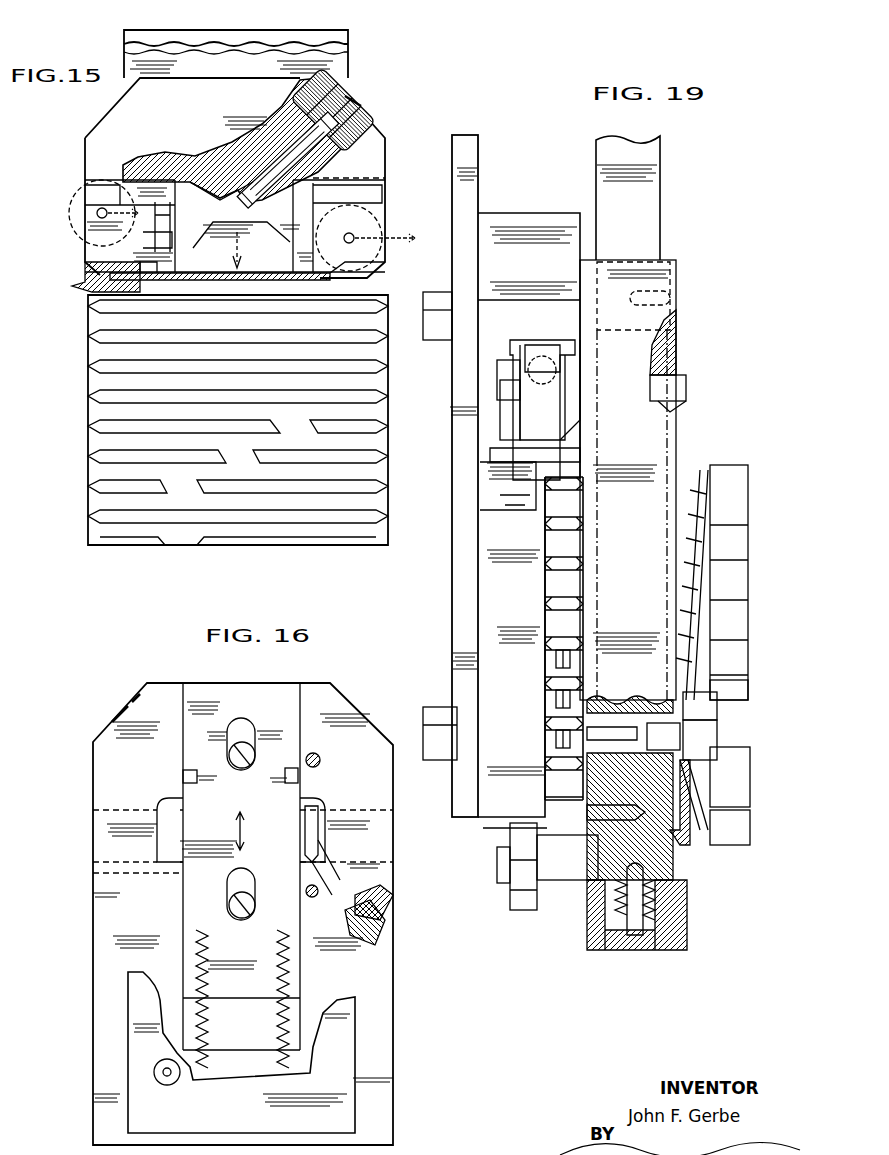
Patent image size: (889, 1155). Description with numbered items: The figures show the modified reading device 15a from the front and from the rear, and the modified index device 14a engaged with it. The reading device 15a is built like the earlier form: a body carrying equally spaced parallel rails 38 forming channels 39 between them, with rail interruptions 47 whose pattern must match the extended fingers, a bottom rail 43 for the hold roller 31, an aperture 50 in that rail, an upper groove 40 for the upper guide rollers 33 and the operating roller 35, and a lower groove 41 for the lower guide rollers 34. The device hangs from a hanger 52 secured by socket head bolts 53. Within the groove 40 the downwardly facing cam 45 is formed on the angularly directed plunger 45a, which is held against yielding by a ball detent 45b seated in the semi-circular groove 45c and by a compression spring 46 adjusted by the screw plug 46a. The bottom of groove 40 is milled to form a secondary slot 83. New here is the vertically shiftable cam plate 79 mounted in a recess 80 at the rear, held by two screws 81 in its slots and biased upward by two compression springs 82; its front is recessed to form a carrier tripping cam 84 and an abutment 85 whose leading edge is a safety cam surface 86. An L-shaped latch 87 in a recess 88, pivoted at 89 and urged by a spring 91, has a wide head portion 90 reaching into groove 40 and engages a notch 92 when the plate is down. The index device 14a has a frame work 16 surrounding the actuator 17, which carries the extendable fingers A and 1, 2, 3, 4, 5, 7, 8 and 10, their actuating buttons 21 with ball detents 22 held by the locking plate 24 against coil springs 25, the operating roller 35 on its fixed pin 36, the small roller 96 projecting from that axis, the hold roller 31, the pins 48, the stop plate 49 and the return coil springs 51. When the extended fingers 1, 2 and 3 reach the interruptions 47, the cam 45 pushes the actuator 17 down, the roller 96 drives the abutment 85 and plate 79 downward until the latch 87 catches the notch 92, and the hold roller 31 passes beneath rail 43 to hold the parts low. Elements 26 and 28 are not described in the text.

In FIG. 19, the extendable finger 1 is at (554, 742).
In FIG. 19, the extendable finger 2 is at (554, 702).
In FIG. 19, the extendable finger 3 is at (554, 664).
In FIG. 19, the extendable finger 4 is at (746, 652).
In FIG. 19, the extendable finger 5 is at (748, 622).
In FIG. 19, the extendable finger 7 is at (748, 582).
In FIG. 19, the extendable finger 8 is at (748, 542).
In FIG. 19, the extendable finger 10 is at (748, 498).
In FIG. 19, the index device 14a is at (682, 280).
In FIG. 15, the reading device 15a is at (120, 128).
In FIG. 16, the reading device 15a is at (332, 690).
In FIG. 19, the frame work 16 is at (645, 551).
In FIG. 19, the actuator 17 is at (710, 790).
In FIG. 19, the actuating buttons 21 is at (750, 654).
In FIG. 19, the ball detent 22 is at (698, 470).
In FIG. 19, the locking plate 24 is at (679, 346).
In FIG. 19, the coil spring 25 is at (686, 510).
In FIG. 19, the drive wheel 26 is at (750, 828).
In FIG. 19, the connecting rod 28 is at (736, 846).
In FIG. 19, the hold roller 31 is at (570, 831).
In FIG. 19, the upper guide rollers 33 is at (564, 452).
In FIG. 19, the lower guide rollers 34 is at (514, 908).
In FIG. 15, the operating roller 35 is at (68, 202).
In FIG. 19, the operating roller 35 is at (550, 404).
In FIG. 19, the fixed pin 36 is at (689, 392).
In FIG. 15, the rails 38 is at (110, 400).
In FIG. 19, the rails 38 is at (572, 594).
In FIG. 15, the channels 39 is at (120, 470).
In FIG. 15, the groove 40 is at (382, 194).
In FIG. 19, the groove 40 is at (530, 344).
In FIG. 19, the groove 41 is at (516, 826).
In FIG. 15, the bottom rail 43 is at (252, 546).
In FIG. 15, the cam 45 is at (258, 208).
In FIG. 19, the cam 45 is at (546, 344).
In FIG. 15, the plunger 45a is at (252, 136).
In FIG. 15, the ball detent 45b is at (334, 158).
In FIG. 15, the semi-circular groove 45c is at (282, 114).
In FIG. 15, the compression spring 46 is at (302, 93).
In FIG. 15, the screw plug 46a is at (362, 108).
In FIG. 16, the screw plug 46a is at (119, 700).
In FIG. 15, the interruptions 47 is at (302, 408).
In FIG. 19, the pins 48 is at (648, 889).
In FIG. 19, the stop plate 49 is at (684, 906).
In FIG. 15, the aperture 50 is at (174, 546).
In FIG. 19, the coil springs 51 is at (614, 916).
In FIG. 15, the hangers 52 is at (343, 57).
In FIG. 16, the hangers 52 is at (260, 1118).
In FIG. 19, the hangers 52 is at (478, 150).
In FIG. 16, the socket head bolts 53 is at (320, 760).
In FIG. 19, the socket head bolts 53 is at (452, 342).
In FIG. 15, the cam plate 79 is at (273, 261).
In FIG. 16, the cam plate 79 is at (258, 700).
In FIG. 16, the recess 80 is at (302, 1010).
In FIG. 16, the screws 81 is at (248, 772).
In FIG. 16, the compression springs 82 is at (268, 1020).
In FIG. 15, the secondary slot 83 is at (382, 211).
In FIG. 19, the secondary slot 83 is at (502, 374).
In FIG. 15, the carrier tripping cam 84 is at (220, 194).
In FIG. 15, the abutment 85 is at (220, 220).
In FIG. 19, the abutment 85 is at (502, 398).
In FIG. 15, the cam surface 86 is at (204, 223).
In FIG. 19, the cam surface 86 is at (504, 424).
In FIG. 15, the L-shaped latch 87 is at (156, 218).
In FIG. 16, the L-shaped latch 87 is at (304, 832).
In FIG. 15, the recess 88 is at (157, 246).
In FIG. 16, the recess 88 is at (332, 862).
In FIG. 19, the recess 88 is at (480, 490).
In FIG. 15, the pivot 89 is at (168, 284).
In FIG. 16, the pivot 89 is at (314, 900).
In FIG. 15, the head portion 90 is at (78, 278).
In FIG. 16, the head portion 90 is at (392, 884).
In FIG. 19, the head portion 90 is at (520, 516).
In FIG. 15, the spring 91 is at (80, 294).
In FIG. 16, the spring 91 is at (392, 914).
In FIG. 19, the spring 91 is at (508, 512).
In FIG. 15, the notch 92 is at (194, 159).
In FIG. 16, the notch 92 is at (301, 774).
In FIG. 15, the small roller 96 is at (76, 225).
In FIG. 19, the small roller 96 is at (496, 386).
In FIG. 19, the extendable finger A is at (748, 788).